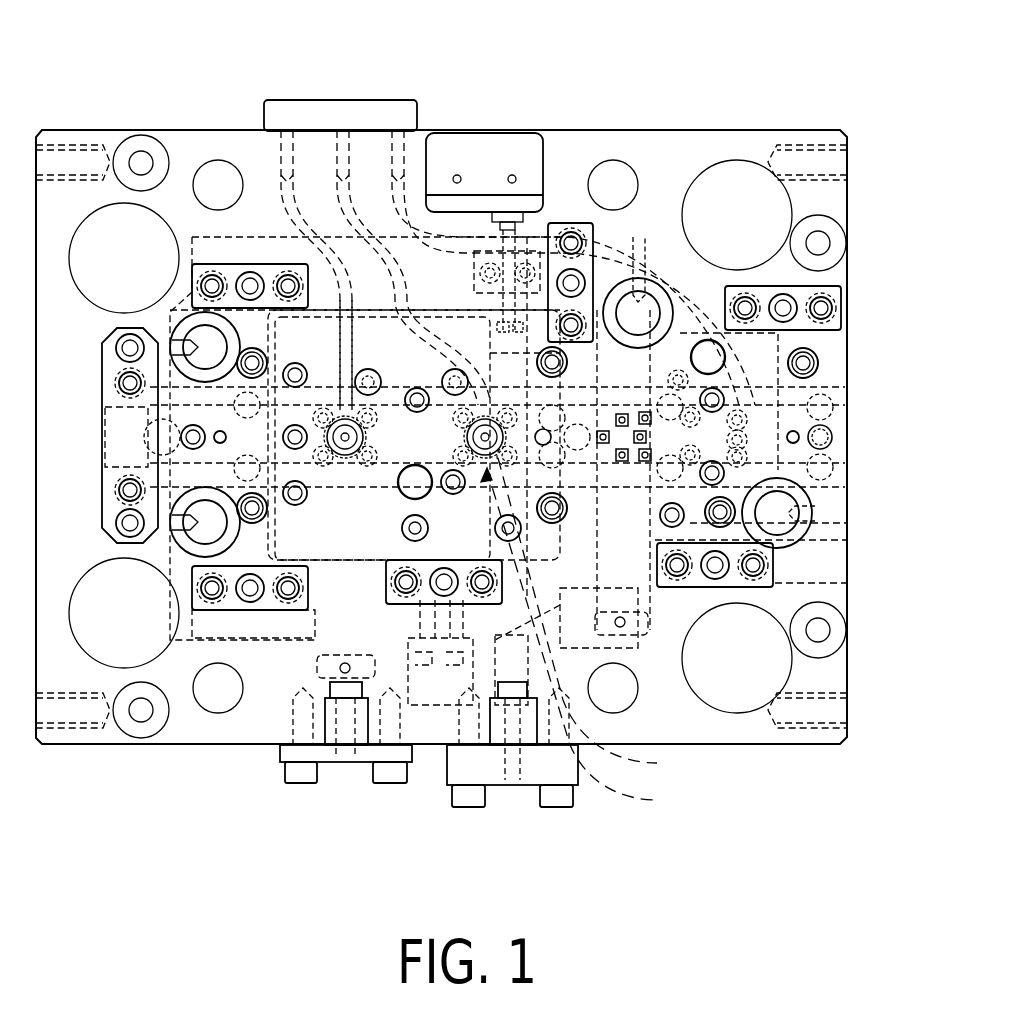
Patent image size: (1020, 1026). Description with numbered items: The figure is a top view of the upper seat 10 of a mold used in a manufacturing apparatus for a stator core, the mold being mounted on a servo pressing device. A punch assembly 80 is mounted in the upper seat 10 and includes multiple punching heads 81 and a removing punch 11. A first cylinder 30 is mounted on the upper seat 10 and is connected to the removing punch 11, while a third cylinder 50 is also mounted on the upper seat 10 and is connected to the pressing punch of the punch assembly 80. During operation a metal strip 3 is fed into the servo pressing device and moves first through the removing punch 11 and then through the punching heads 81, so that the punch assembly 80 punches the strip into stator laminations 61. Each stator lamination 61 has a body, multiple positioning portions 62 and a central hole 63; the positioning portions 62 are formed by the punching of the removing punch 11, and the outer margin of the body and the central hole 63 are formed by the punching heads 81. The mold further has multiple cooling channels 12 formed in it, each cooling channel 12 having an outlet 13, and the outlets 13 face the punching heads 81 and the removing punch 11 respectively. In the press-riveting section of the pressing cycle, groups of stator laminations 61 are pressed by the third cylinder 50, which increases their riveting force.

The upper seat 10 is at (673, 152).
The cooling channels 12 is at (287, 130).
The outlet 13 is at (352, 372).
The metal strip 3 is at (833, 422).
The removing punch 11 is at (603, 463).
The stator lamination 61 is at (362, 402).
The positioning portions 62 is at (421, 506).
The central hole 63 is at (343, 405).
The punching heads 81 is at (750, 420).
The punch assembly 80 is at (585, 644).
The third cylinder 50 is at (328, 752).
The first cylinder 30 is at (528, 773).